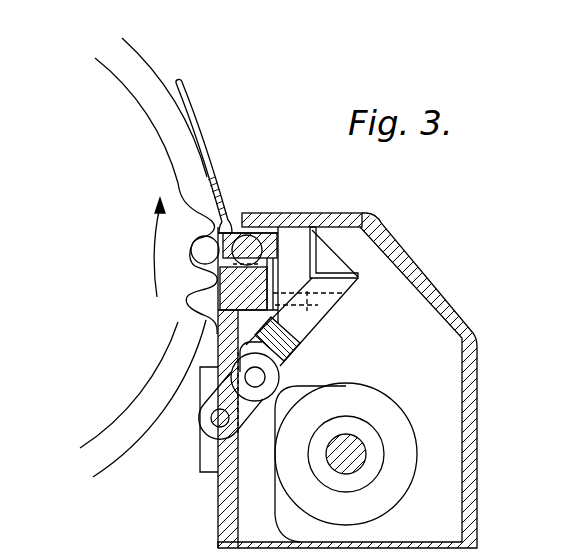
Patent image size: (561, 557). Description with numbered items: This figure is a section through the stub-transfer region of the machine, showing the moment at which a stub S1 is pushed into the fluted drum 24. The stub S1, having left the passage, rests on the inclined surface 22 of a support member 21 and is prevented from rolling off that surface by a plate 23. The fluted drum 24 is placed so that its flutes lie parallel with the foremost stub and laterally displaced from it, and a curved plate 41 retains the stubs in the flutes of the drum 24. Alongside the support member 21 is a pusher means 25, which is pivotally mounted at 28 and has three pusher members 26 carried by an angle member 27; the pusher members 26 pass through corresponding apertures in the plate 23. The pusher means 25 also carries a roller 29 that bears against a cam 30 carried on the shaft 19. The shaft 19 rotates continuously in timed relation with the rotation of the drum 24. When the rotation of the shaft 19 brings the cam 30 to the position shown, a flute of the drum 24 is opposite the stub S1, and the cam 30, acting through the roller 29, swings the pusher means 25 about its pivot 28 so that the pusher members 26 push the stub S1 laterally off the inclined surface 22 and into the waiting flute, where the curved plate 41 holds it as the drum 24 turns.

The fluted drum 24 is at (108, 97).
The curved plate 41 is at (192, 112).
The pusher members 26 is at (290, 240).
The angle member 27 is at (343, 262).
The plate 23 is at (262, 272).
The pusher means 25 is at (322, 342).
The inclined surface 22 is at (237, 265).
The support member 21 is at (252, 318).
The pivot 28 is at (209, 418).
The roller 29 is at (266, 403).
The shaft 19 is at (352, 440).
The cam 30 is at (396, 474).
The stub S1 is at (194, 249).